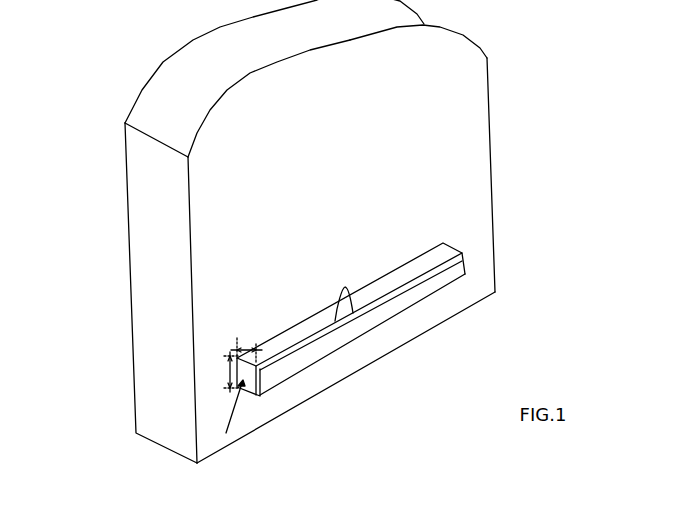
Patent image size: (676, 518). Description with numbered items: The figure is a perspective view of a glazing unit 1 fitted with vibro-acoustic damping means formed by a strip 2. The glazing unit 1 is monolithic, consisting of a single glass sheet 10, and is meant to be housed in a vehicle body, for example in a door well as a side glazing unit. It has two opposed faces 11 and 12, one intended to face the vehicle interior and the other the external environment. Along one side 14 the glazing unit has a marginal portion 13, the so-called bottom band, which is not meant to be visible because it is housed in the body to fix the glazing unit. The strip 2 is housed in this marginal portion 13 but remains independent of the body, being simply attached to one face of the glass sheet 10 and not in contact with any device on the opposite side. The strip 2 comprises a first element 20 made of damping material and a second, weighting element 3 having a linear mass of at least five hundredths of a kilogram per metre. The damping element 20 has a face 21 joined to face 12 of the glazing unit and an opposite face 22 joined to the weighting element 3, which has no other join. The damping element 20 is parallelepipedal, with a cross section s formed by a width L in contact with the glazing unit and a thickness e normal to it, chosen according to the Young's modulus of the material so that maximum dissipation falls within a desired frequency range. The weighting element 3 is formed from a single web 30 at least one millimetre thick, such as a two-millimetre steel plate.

The glazing unit 1 is at (530, 89).
The glass sheet 10 is at (137, 277).
The face 11 is at (143, 88).
The face 12 is at (465, 142).
The marginal portion 13 is at (485, 227).
The side 14 is at (413, 338).
The strip 2 is at (342, 358).
The weighting element 3 is at (262, 396).
The first element made of damping material 20 is at (360, 358).
The face 21 is at (297, 325).
The face 22 is at (348, 296).
The web 30 is at (417, 297).